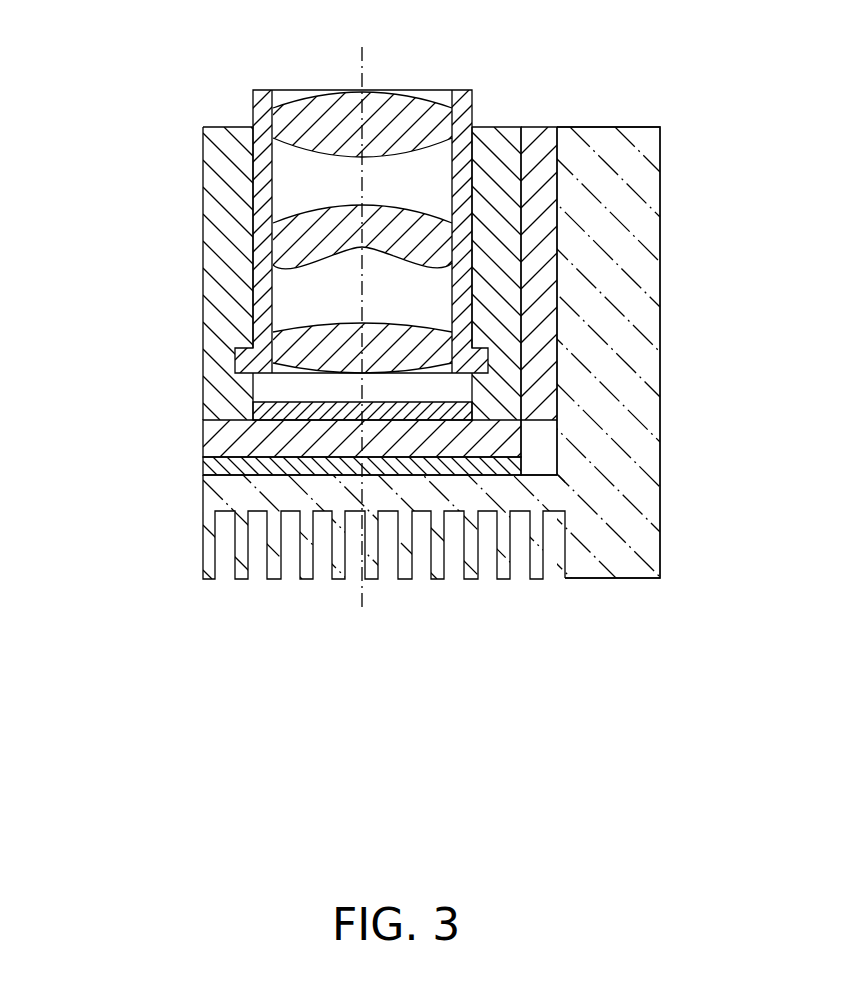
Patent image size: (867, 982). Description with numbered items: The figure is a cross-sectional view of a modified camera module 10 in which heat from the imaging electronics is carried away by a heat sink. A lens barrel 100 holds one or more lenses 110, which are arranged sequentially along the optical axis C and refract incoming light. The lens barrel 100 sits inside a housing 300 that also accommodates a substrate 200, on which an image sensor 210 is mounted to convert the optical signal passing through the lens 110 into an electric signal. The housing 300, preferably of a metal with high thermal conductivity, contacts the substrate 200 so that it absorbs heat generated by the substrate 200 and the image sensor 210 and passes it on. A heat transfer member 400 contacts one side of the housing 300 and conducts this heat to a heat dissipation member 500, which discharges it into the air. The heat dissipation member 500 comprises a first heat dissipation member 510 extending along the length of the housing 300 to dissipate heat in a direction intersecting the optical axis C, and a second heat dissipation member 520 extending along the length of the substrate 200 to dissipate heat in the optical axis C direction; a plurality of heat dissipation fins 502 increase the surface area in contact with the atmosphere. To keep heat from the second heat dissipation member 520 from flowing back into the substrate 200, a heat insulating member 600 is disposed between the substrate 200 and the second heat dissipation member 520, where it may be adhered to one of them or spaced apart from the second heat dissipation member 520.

The camera module 10 is at (168, 101).
The lens barrel 100 is at (258, 105).
The lens 110 is at (412, 105).
The substrate 200 is at (205, 437).
The image sensor 210 is at (255, 405).
The housing 300 is at (207, 262).
The heat transfer member 400 is at (540, 142).
The heat dissipation member 500 is at (452, 370).
The heat dissipation fin 502 is at (633, 128).
The first heat dissipation member 510 is at (575, 150).
The second heat dissipation member 520 is at (215, 492).
The heat insulating member 600 is at (212, 466).
The optical axis C is at (355, 68).